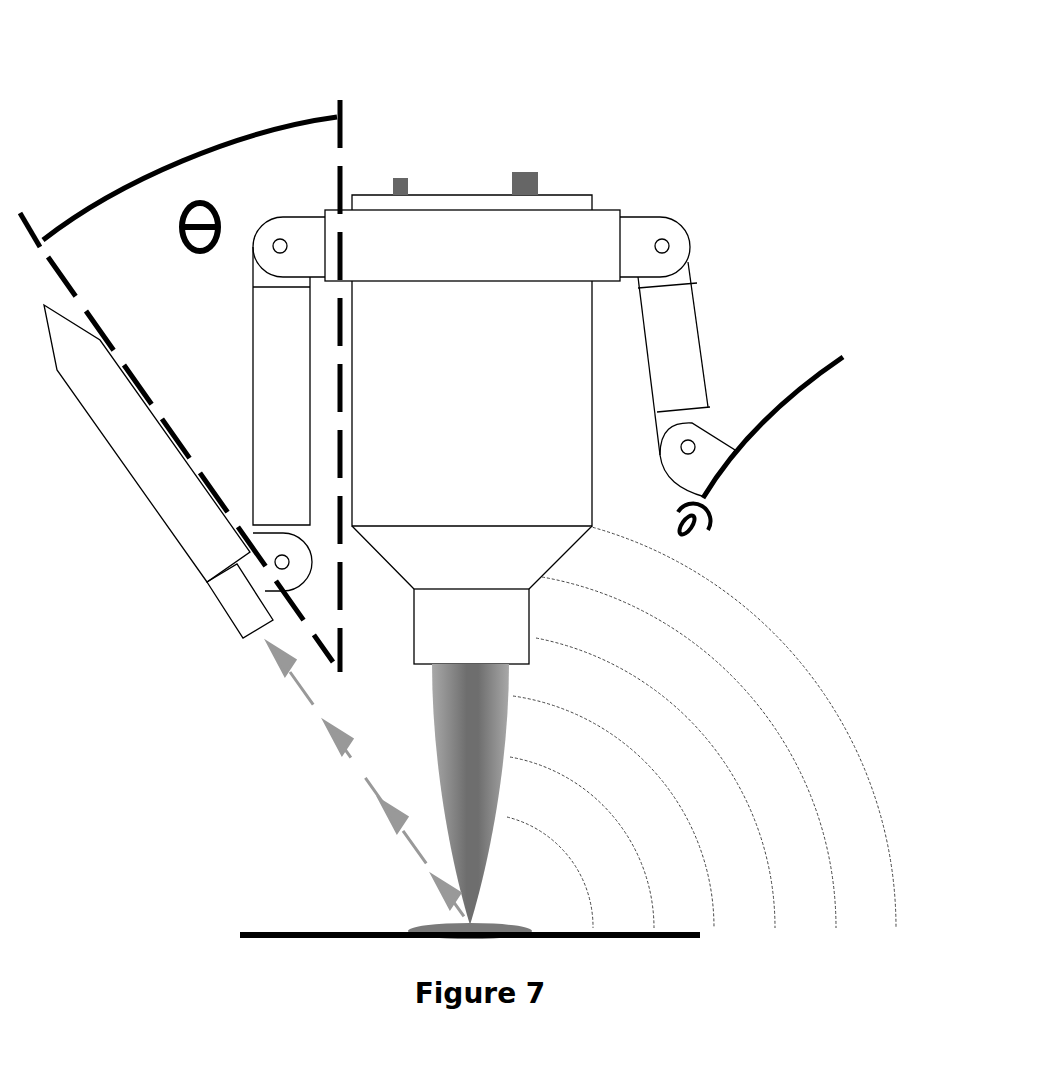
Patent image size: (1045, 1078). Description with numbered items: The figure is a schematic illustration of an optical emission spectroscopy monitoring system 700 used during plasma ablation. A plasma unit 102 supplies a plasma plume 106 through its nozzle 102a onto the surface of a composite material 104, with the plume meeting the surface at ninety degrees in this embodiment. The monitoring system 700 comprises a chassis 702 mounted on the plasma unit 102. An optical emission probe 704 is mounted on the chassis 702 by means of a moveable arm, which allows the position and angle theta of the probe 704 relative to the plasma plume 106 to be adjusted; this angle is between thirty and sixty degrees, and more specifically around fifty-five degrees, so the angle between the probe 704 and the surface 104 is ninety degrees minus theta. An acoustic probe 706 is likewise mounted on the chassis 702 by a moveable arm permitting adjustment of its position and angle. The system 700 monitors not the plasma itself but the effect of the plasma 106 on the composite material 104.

The monitoring system 700 is at (175, 97).
The chassis 702 is at (548, 237).
The acoustic probe 706 is at (800, 377).
The plasma unit 102 is at (472, 435).
The nozzle 102a is at (471, 626).
The plasma plume 106 is at (473, 761).
The optical emission probe 704 is at (155, 495).
The composite material 104 is at (598, 934).